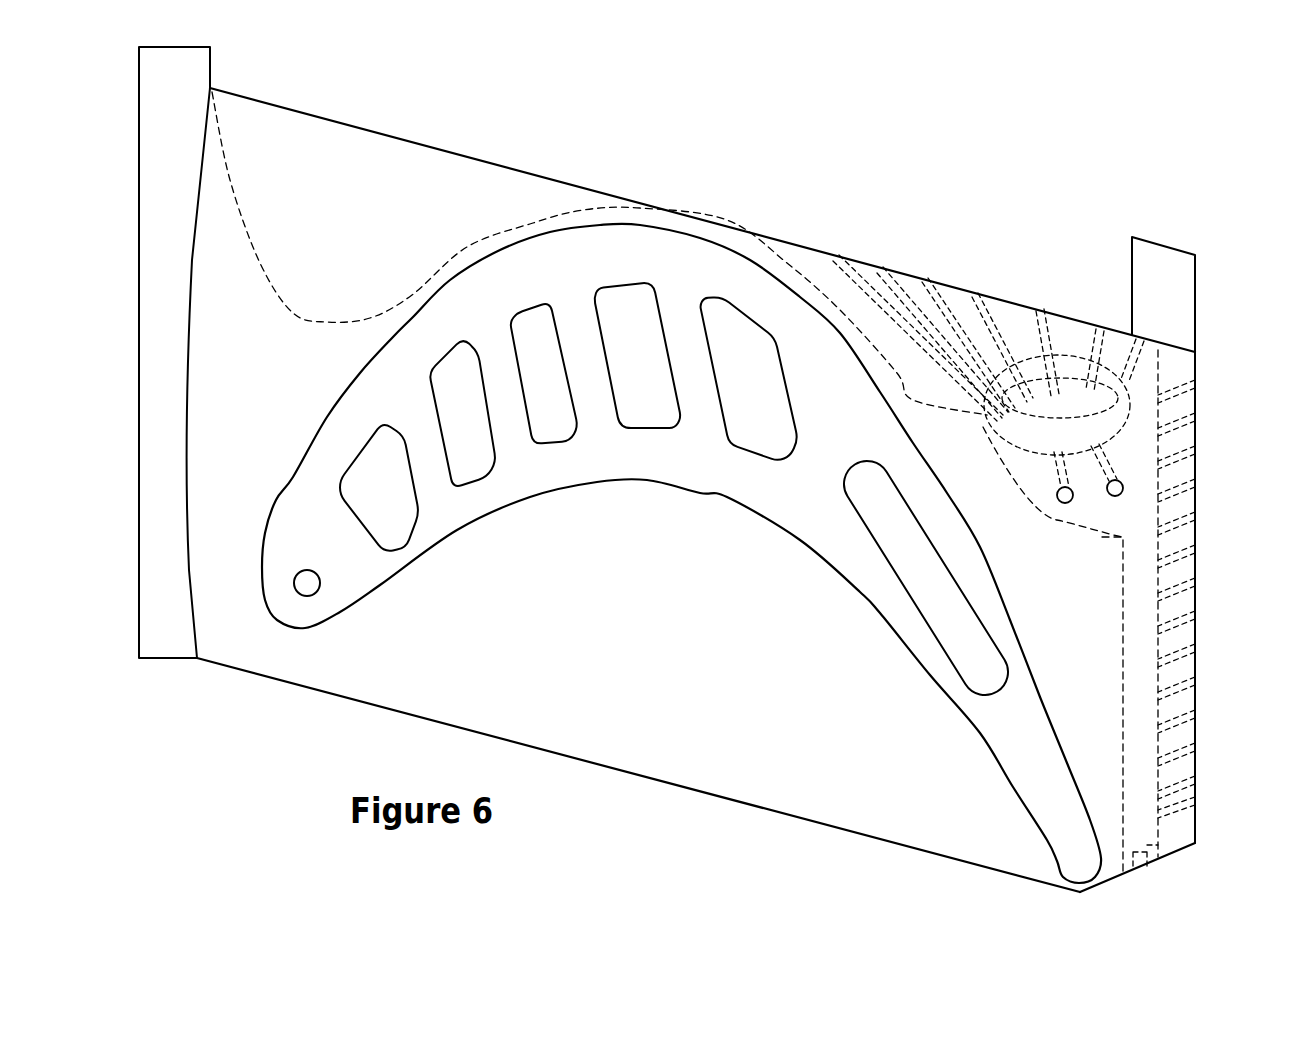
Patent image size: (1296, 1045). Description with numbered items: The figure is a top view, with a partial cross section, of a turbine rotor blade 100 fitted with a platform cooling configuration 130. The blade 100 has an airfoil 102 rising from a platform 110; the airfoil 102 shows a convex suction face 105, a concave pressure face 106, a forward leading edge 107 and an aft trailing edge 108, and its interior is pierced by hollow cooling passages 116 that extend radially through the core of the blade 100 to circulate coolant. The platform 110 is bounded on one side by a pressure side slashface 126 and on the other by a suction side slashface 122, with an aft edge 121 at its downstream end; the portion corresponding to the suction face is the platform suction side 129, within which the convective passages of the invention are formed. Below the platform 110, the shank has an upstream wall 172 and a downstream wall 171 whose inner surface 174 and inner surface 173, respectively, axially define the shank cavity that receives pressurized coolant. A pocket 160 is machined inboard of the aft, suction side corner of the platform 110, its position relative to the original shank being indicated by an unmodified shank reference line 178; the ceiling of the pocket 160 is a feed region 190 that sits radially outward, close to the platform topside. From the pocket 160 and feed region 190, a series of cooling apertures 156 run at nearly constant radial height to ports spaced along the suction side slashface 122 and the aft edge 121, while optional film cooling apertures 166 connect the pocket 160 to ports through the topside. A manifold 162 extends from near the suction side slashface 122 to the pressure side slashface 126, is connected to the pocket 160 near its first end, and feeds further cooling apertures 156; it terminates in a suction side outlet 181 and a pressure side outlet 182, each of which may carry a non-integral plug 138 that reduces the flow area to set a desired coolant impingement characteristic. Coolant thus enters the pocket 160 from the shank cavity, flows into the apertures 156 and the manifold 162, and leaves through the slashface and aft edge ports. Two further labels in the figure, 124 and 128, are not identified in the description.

The turbine rotor blade 100 is at (666, 150).
The airfoil 102 is at (813, 411).
The suction face 105 is at (417, 310).
The pressure face 106 is at (459, 532).
The leading edge 107 is at (272, 618).
The trailing edge 108 is at (1083, 878).
The platform 110 is at (246, 431).
The cooling passages 116 is at (358, 501).
The aft edge 121 is at (1196, 634).
The suction side slashface 122 is at (506, 165).
The first side edge 124 is at (212, 102).
The pressure side slashface 126 is at (235, 672).
The platform 128 is at (641, 716).
The platform suction side 129 is at (817, 273).
The platform cooling configuration 130 is at (1212, 386).
The non-integral plug 138 is at (1160, 350).
The cooling apertures 156 is at (833, 258).
The pocket 160 is at (1062, 515).
The manifold 162 is at (1135, 666).
The film cooling aperture 166 is at (1055, 505).
The downstream wall 171 is at (1160, 270).
The upstream wall 172 is at (153, 83).
The inner surface of the downstream wall 173 is at (1132, 262).
The inner surface of the upstream wall 174 is at (210, 62).
The unmodified shank reference line 178 is at (925, 393).
The suction side outlet 181 is at (1143, 355).
The pressure side outlet 182 is at (1142, 866).
The feed region 190 is at (1010, 453).